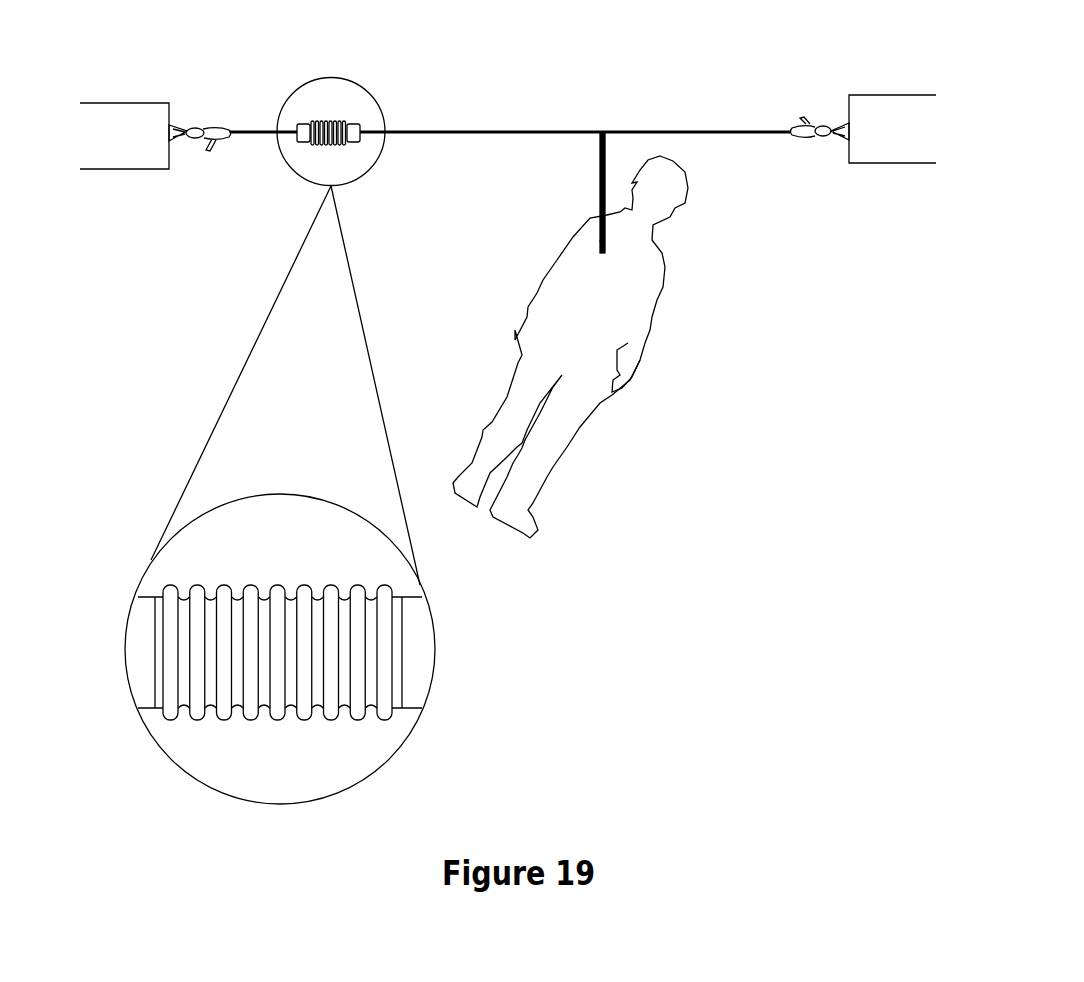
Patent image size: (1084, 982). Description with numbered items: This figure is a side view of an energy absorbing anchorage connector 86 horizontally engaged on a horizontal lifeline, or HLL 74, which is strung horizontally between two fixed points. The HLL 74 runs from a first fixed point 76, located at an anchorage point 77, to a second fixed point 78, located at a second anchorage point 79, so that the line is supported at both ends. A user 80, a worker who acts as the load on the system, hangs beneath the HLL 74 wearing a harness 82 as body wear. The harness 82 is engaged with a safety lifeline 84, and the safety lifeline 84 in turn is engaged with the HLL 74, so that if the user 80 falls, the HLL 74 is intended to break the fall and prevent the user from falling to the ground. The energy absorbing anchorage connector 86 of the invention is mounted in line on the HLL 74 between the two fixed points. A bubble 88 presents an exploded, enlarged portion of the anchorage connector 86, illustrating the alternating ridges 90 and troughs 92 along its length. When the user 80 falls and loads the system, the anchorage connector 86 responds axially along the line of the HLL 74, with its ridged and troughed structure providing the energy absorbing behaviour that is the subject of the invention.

The horizontal lifeline (HLL) 74 is at (636, 130).
The first fixed point 76 is at (173, 126).
The anchorage point 77 is at (184, 128).
The second fixed point 78 is at (847, 110).
The anchorage point 79 is at (838, 141).
The user 80 is at (652, 225).
The harness 82 is at (600, 247).
The safety lifeline 84 is at (600, 170).
The energy absorbing anchorage connector 86 is at (325, 145).
The bubble 88 is at (430, 610).
The ridges 90 is at (198, 585).
The troughs 92 is at (237, 595).